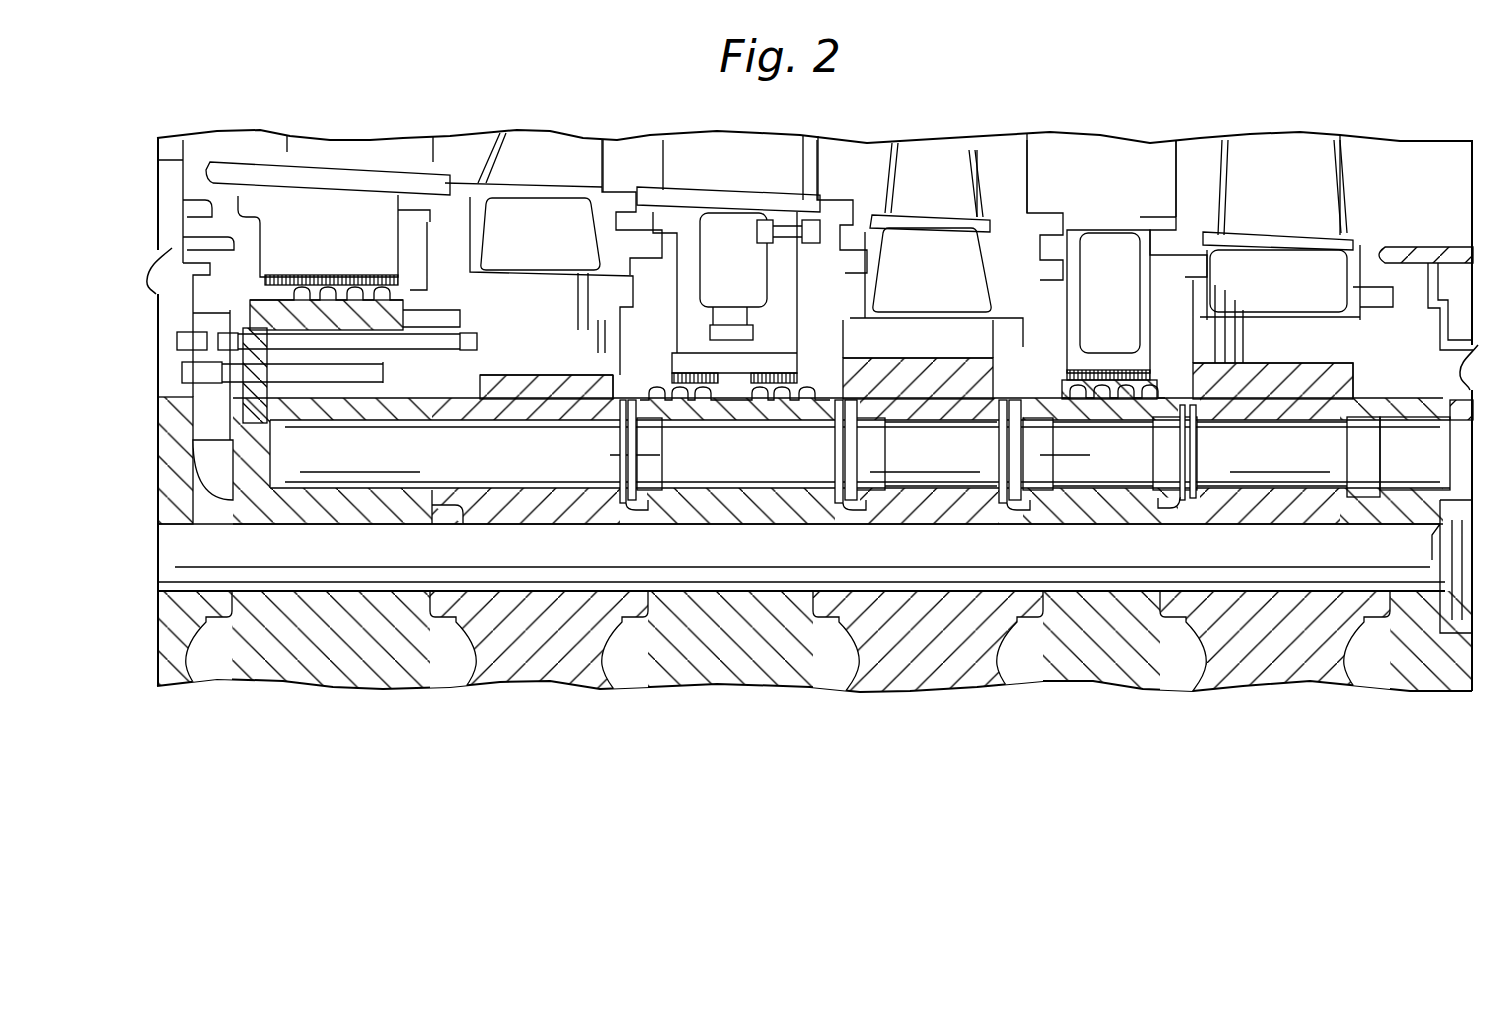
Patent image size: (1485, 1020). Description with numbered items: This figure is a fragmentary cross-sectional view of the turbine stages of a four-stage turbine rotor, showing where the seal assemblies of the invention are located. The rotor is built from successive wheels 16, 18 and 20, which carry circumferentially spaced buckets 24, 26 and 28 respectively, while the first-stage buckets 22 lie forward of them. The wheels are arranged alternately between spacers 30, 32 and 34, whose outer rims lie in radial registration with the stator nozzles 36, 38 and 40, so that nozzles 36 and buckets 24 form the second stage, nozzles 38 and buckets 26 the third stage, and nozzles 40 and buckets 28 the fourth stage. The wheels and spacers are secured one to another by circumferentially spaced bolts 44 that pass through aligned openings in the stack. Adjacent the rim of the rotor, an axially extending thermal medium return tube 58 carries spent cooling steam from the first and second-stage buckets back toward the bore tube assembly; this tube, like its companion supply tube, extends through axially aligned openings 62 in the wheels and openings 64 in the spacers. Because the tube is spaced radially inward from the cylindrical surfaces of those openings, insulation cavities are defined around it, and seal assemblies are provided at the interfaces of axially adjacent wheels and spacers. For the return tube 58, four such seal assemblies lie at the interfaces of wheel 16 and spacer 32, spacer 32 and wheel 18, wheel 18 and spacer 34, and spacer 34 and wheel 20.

The wheel 16 is at (537, 672).
The wheel 18 is at (937, 676).
The wheel 20 is at (1280, 668).
The buckets 22 is at (200, 143).
The buckets 24 is at (548, 148).
The buckets 26 is at (934, 150).
The buckets 28 is at (1288, 148).
The spacer 30 is at (343, 680).
The spacer 32 is at (740, 668).
The spacer 34 is at (1100, 665).
The nozzles 36 is at (408, 150).
The nozzles 38 is at (745, 150).
The nozzles 40 is at (1102, 150).
The bolts 44 is at (938, 559).
The thermal medium return tube 58 is at (922, 450).
The openings 62 is at (1300, 430).
The openings 64 is at (1088, 432).